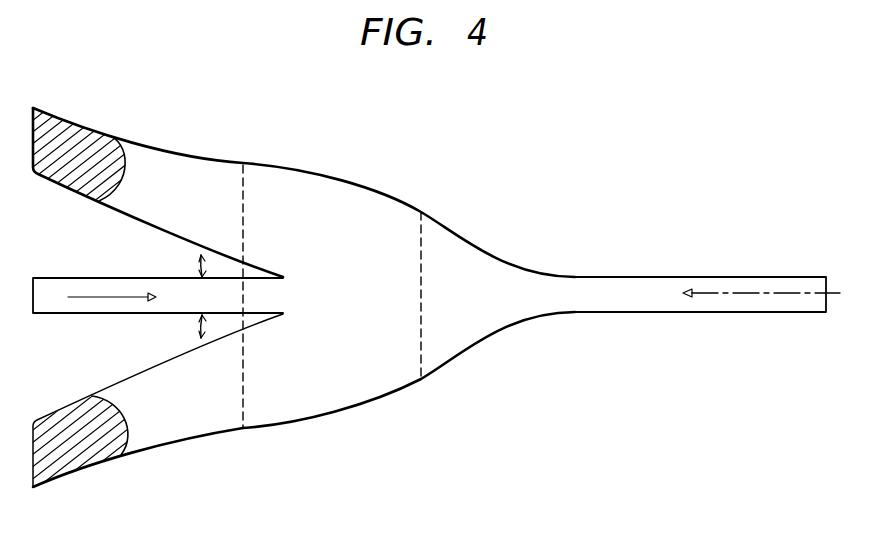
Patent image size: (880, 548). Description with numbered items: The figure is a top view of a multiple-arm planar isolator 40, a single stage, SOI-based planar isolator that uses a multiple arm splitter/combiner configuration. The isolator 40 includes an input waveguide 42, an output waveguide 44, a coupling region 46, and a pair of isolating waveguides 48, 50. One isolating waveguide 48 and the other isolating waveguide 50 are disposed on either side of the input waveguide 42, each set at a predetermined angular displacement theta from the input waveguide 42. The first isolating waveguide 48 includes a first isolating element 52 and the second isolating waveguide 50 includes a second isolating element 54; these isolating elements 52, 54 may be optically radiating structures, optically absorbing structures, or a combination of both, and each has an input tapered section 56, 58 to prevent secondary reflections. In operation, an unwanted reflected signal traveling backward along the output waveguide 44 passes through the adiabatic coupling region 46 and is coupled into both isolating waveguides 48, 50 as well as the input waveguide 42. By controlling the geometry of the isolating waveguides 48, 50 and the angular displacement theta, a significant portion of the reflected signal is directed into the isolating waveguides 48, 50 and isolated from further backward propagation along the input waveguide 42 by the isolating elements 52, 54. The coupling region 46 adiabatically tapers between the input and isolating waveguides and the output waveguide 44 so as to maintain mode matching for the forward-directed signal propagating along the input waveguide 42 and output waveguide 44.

The multiple-arm planar isolator 40 is at (568, 161).
The input waveguide 42 is at (70, 279).
The output waveguide 44 is at (665, 277).
The coupling region 46 is at (304, 402).
The first isolating waveguide 48 is at (180, 170).
The second isolating waveguide 50 is at (180, 423).
The first isolating element 52 is at (68, 124).
The second isolating element 54 is at (55, 478).
The input tapered section 56 is at (123, 142).
The input tapered section 58 is at (125, 453).